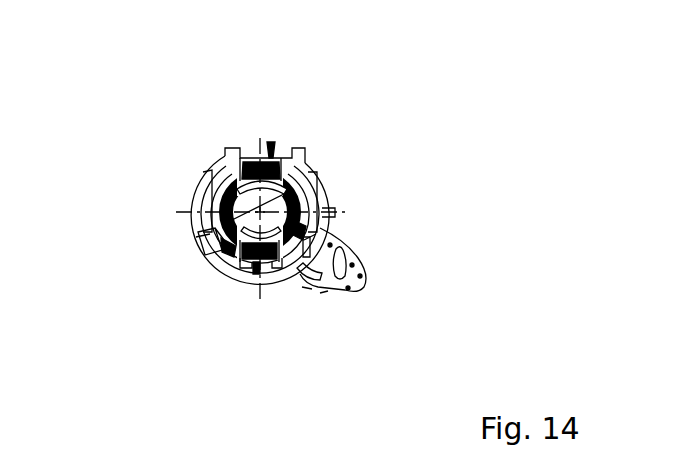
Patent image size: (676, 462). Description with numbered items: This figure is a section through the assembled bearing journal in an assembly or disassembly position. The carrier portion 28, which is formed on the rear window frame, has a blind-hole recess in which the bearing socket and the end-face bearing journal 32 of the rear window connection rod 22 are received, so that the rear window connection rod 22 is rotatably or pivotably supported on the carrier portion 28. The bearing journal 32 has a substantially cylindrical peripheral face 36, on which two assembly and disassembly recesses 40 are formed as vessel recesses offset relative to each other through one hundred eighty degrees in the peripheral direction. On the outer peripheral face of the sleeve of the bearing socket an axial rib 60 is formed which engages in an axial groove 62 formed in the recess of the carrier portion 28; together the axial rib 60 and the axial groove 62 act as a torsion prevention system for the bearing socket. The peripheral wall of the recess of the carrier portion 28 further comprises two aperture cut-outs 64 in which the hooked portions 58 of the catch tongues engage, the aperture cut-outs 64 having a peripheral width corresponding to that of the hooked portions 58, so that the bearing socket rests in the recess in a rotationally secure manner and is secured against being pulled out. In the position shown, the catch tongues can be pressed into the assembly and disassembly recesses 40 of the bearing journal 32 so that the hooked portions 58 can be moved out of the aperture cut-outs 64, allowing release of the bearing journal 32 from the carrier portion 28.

The rear window connection rod 22 is at (352, 282).
The carrier portion 28 is at (298, 170).
The bearing journal 32 is at (242, 190).
The peripheral face 36 is at (292, 200).
The assembly and disassembly recesses 40 is at (240, 178).
The hooked portions 58 is at (258, 162).
The axial rib 60 is at (198, 234).
The axial groove 62 is at (224, 255).
The aperture cut-outs 64 is at (268, 165).